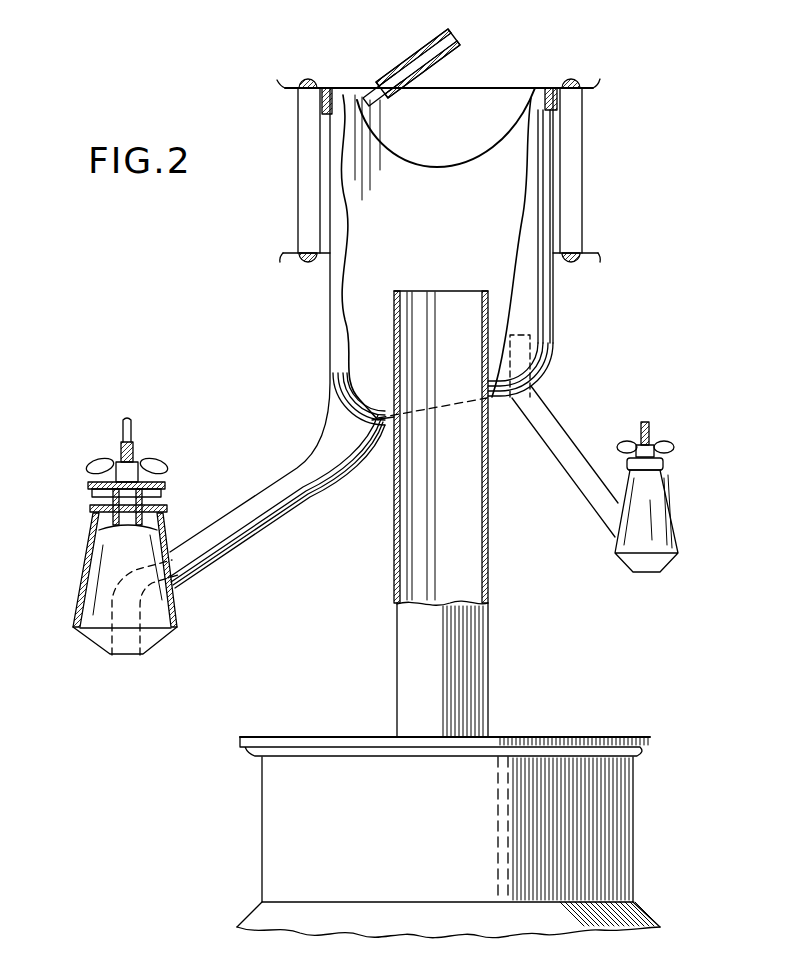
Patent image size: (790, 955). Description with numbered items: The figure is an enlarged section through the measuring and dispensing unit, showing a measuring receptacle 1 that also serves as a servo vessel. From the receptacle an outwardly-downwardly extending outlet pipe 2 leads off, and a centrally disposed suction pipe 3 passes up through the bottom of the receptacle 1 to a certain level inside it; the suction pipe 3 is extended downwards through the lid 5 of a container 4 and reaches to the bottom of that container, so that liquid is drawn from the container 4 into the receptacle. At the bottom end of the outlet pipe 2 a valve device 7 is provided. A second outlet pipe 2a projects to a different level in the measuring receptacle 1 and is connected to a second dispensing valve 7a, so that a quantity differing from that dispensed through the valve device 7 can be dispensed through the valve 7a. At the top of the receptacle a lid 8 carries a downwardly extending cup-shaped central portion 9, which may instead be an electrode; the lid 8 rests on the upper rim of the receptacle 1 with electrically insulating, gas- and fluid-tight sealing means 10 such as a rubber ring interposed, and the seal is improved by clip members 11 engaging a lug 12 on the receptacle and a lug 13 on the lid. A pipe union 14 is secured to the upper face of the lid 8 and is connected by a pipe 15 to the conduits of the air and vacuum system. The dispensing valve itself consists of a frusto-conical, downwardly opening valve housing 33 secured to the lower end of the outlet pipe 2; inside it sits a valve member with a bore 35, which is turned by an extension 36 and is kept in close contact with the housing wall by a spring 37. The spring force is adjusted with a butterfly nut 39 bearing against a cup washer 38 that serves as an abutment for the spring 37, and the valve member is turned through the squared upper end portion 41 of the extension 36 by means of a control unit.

The measuring receptacle 1 is at (535, 316).
The outlet pipe 2 is at (290, 505).
The outlet pipe 2a is at (572, 450).
The suction pipe 3 is at (470, 433).
The container 4 is at (615, 825).
The lid 5 is at (553, 737).
The valve device 7 is at (135, 526).
The dispensing valve 7a is at (635, 538).
The lid 8 is at (515, 87).
The cup-shaped central portion 9 is at (431, 165).
The sealing means 10 is at (552, 88).
The clip members 11 is at (582, 178).
The lug 12 is at (585, 252).
The lug 13 is at (599, 82).
The pipe union 14 is at (372, 88).
The pipe 15 is at (417, 46).
The valve housing 33 is at (80, 572).
The bore 35 is at (180, 612).
The extension 36 is at (168, 508).
The spring 37 is at (165, 483).
The cup washer 38 is at (92, 487).
The butterfly nut 39 is at (102, 458).
The squared upper end portion 41 is at (132, 432).